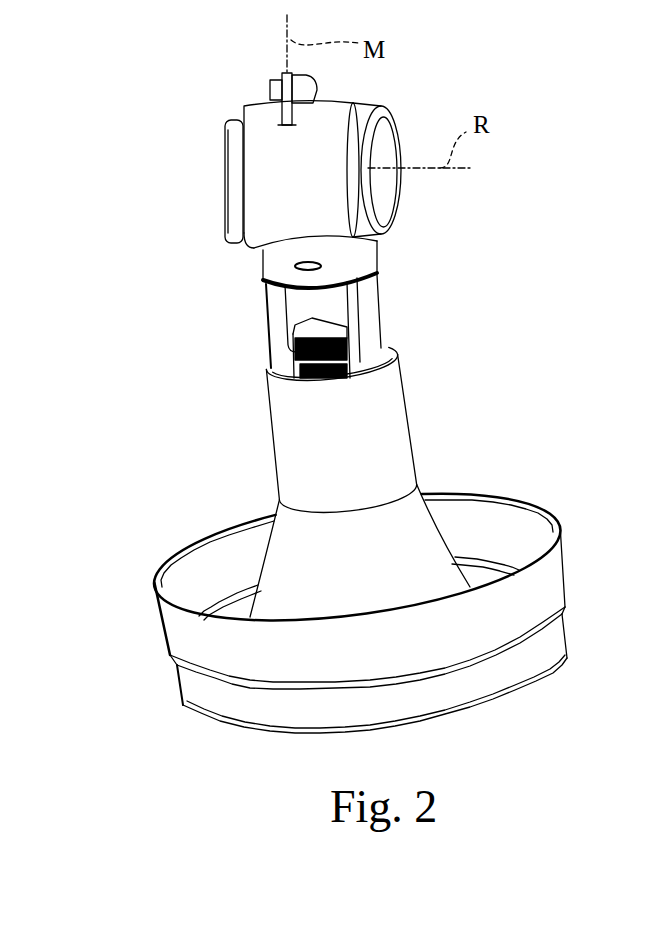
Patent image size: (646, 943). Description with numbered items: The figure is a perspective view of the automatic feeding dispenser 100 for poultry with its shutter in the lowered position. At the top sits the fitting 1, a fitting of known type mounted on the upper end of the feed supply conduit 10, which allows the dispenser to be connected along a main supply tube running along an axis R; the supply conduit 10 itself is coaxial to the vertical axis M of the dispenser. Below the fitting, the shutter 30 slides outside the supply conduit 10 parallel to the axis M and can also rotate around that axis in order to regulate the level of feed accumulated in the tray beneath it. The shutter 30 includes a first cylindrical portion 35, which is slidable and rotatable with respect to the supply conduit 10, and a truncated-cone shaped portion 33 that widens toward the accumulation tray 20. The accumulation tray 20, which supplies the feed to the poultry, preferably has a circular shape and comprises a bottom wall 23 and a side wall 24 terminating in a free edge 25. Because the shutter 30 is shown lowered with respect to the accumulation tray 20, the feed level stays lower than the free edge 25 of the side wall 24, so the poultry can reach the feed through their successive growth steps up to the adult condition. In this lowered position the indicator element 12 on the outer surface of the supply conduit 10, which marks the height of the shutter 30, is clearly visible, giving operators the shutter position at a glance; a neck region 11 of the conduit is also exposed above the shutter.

The automatic feeding dispenser 100 is at (230, 421).
The fitting 1 is at (253, 188).
The feed supply conduit 10 is at (370, 289).
The inner sleeve 11 is at (290, 314).
The indicator element 12 is at (347, 343).
The shutter 30 is at (252, 499).
The first cylindrical portion 35 is at (390, 422).
The truncated-cone shaped portion 33 is at (420, 530).
The accumulation tray 20 is at (165, 694).
The bottom wall 23 is at (493, 577).
The side wall 24 is at (477, 628).
The free edge 25 is at (160, 572).